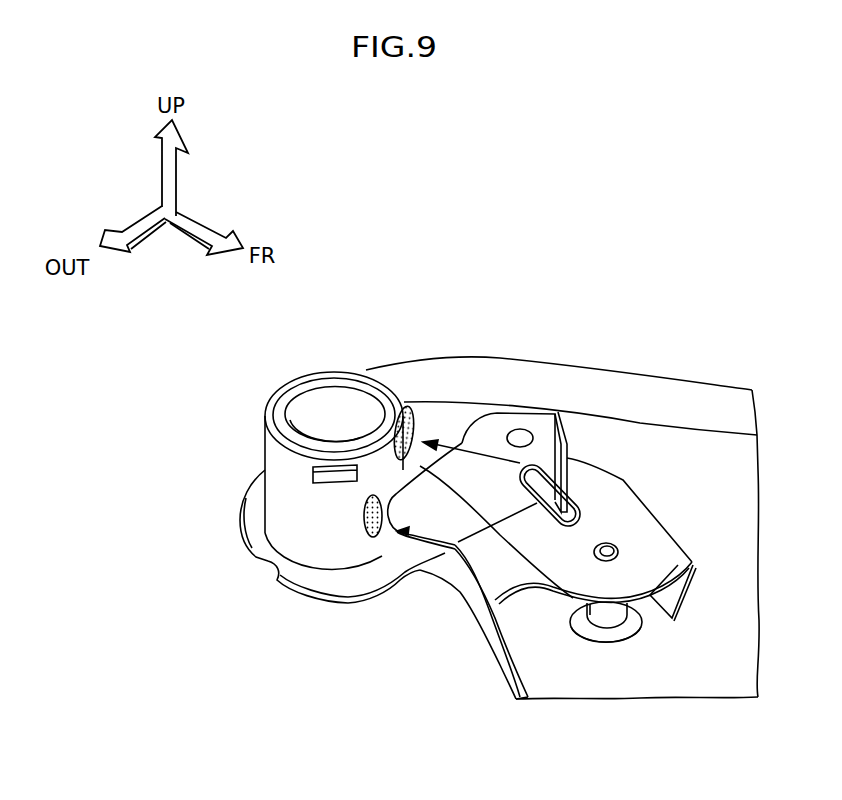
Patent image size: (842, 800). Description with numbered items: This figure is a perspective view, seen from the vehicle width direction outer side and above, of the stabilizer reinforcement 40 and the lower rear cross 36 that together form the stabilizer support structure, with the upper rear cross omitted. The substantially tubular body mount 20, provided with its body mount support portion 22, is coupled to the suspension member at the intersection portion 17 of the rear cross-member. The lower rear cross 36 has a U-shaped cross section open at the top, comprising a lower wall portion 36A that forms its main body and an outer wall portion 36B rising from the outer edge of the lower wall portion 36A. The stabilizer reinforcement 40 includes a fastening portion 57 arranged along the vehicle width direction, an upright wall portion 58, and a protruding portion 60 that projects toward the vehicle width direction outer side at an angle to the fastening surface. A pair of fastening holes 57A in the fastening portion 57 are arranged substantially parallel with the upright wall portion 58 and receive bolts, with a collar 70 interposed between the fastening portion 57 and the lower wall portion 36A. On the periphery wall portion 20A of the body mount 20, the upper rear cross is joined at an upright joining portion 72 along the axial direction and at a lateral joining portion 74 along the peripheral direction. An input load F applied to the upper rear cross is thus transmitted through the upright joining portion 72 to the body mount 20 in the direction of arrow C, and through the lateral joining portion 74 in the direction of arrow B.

The intersection portion 17 is at (575, 396).
The body mount 20 is at (309, 381).
The periphery wall portion 20A is at (278, 457).
The body mount support portion 22 is at (258, 362).
The lower rear cross 36 is at (589, 610).
The lower wall portion 36A is at (582, 682).
The outer wall portion 36B is at (509, 665).
The stabilizer reinforcement 40 is at (560, 494).
The fastening portion 57 is at (633, 515).
The fastening hole 57A is at (558, 412).
The upright wall portion 58 is at (677, 595).
The protruding portion 60 is at (488, 548).
The collar 70 is at (599, 615).
The upright joining portion 72 is at (374, 538).
The lateral joining portion 74 is at (414, 420).
The arrow B is at (523, 436).
The arrow C is at (430, 535).
The input load F is at (565, 464).